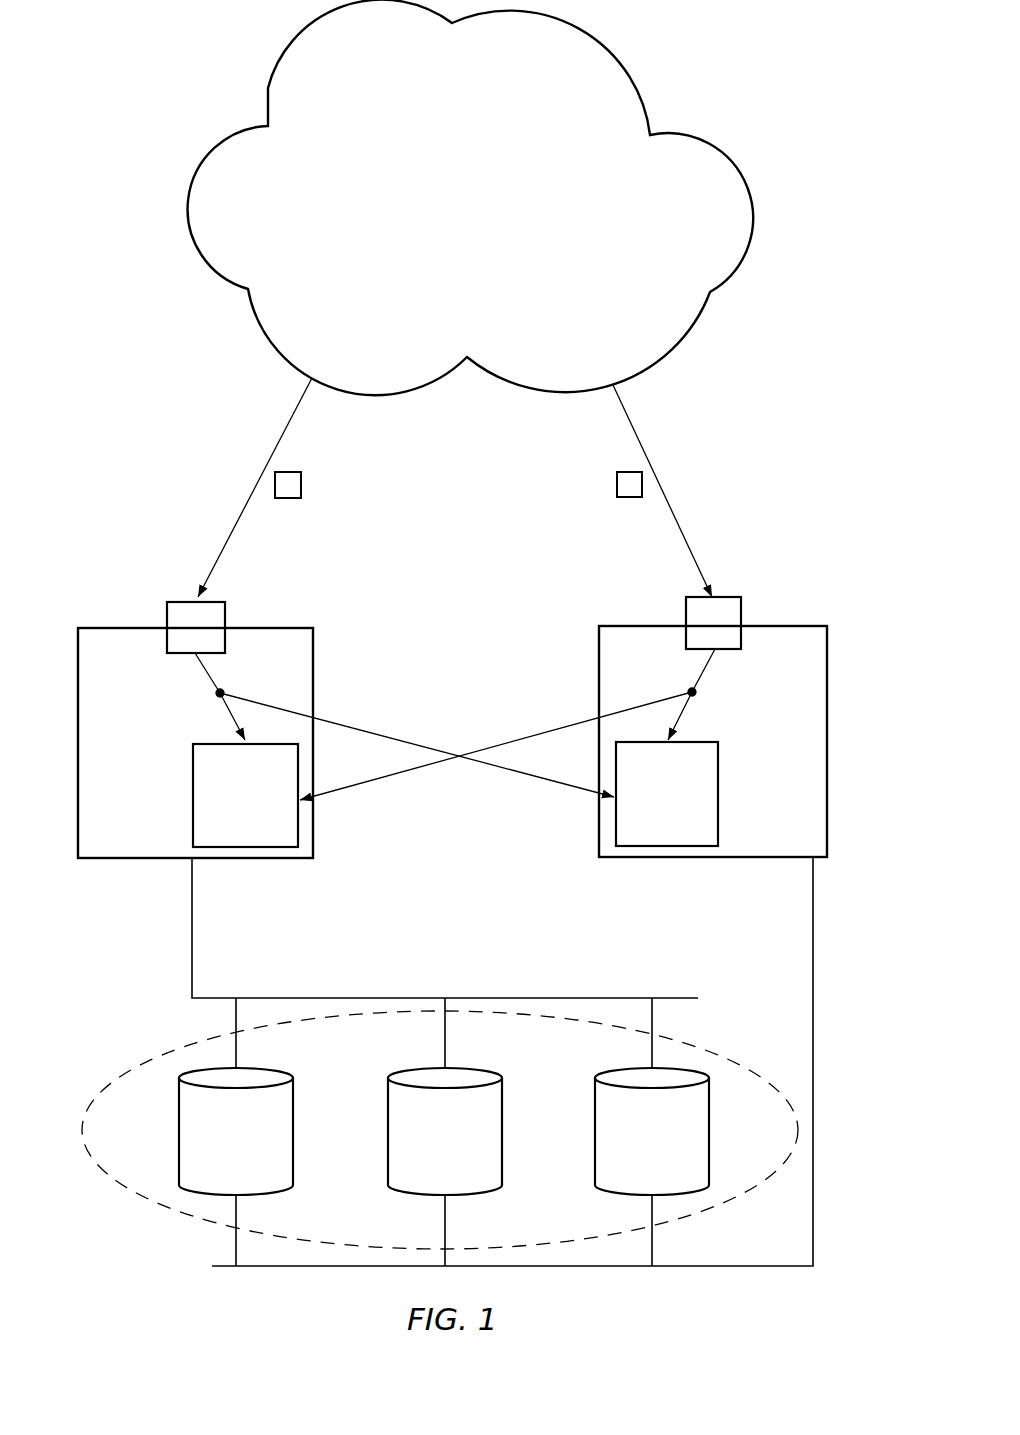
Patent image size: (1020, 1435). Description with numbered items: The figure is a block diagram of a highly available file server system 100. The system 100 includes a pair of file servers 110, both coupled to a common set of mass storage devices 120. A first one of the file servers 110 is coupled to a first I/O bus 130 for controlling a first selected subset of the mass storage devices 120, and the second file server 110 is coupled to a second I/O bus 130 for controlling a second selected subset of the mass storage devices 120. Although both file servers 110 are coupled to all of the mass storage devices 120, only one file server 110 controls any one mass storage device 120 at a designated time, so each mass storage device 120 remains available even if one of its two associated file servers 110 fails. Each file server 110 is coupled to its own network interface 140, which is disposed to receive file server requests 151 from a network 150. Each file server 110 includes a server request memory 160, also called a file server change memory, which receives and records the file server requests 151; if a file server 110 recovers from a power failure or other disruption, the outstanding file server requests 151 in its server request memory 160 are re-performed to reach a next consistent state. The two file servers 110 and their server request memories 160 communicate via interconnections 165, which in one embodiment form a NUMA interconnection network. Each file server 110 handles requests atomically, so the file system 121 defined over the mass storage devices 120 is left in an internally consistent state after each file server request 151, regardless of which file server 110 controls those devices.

The file server system 100 is at (740, 120).
The file server 110 is at (313, 672).
The mass storage device 120 is at (180, 1145).
The file system 121 is at (143, 1066).
The I/O bus 130 is at (343, 997).
The network interface 140 is at (226, 613).
The network 150 is at (268, 88).
The file server request 151 is at (302, 484).
The server request memory 160 is at (193, 797).
The interconnection 165 is at (455, 724).